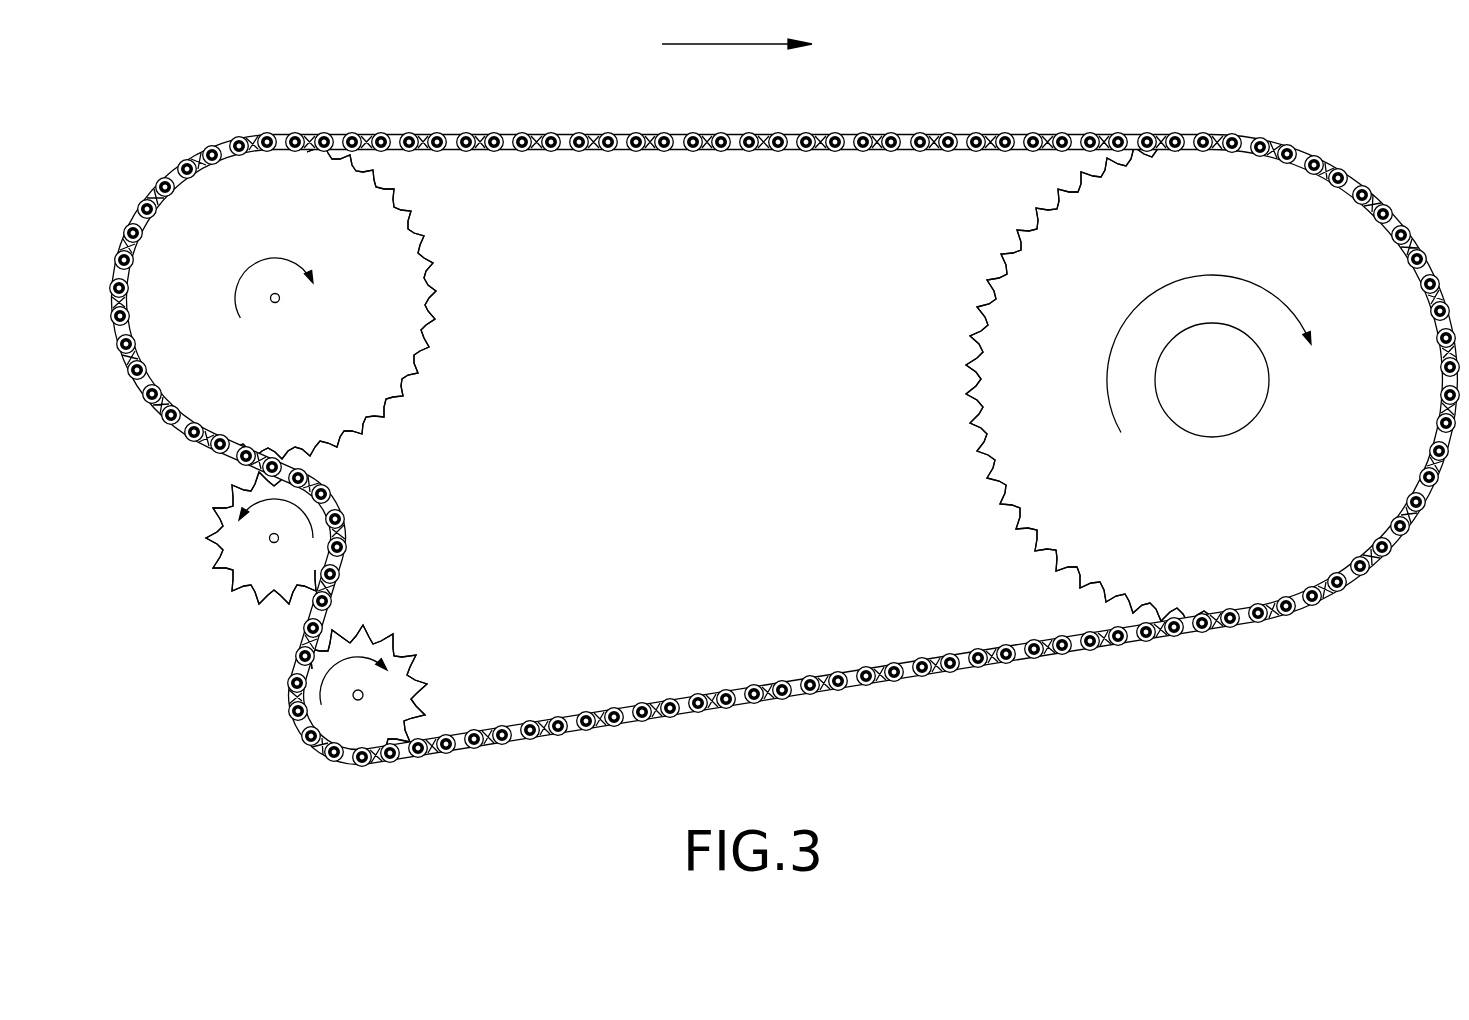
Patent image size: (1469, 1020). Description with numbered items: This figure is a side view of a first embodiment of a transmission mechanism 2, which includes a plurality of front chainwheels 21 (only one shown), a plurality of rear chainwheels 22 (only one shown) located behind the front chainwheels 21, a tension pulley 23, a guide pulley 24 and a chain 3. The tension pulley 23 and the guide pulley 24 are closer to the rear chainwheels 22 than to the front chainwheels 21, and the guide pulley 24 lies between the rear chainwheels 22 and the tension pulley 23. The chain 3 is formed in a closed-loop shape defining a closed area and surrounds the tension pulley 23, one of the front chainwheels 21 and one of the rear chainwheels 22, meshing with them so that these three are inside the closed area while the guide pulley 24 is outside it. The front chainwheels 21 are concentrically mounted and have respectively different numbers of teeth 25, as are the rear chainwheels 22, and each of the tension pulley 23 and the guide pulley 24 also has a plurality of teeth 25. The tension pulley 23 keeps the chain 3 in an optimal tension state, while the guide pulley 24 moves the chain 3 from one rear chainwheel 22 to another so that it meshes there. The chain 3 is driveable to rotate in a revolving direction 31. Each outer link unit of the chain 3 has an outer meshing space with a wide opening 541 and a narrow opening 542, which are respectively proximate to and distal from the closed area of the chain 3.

The transmission mechanism 2 is at (1410, 182).
The front chainwheel 21 is at (1277, 213).
The rear chainwheel 22 is at (197, 212).
The tension pulley 23 is at (372, 722).
The guide pulley 24 is at (250, 555).
The teeth 25 is at (415, 250).
The chain 3 is at (822, 133).
The revolving direction 31 is at (717, 44).
The wide opening 541 is at (617, 153).
The narrow opening 542 is at (623, 133).